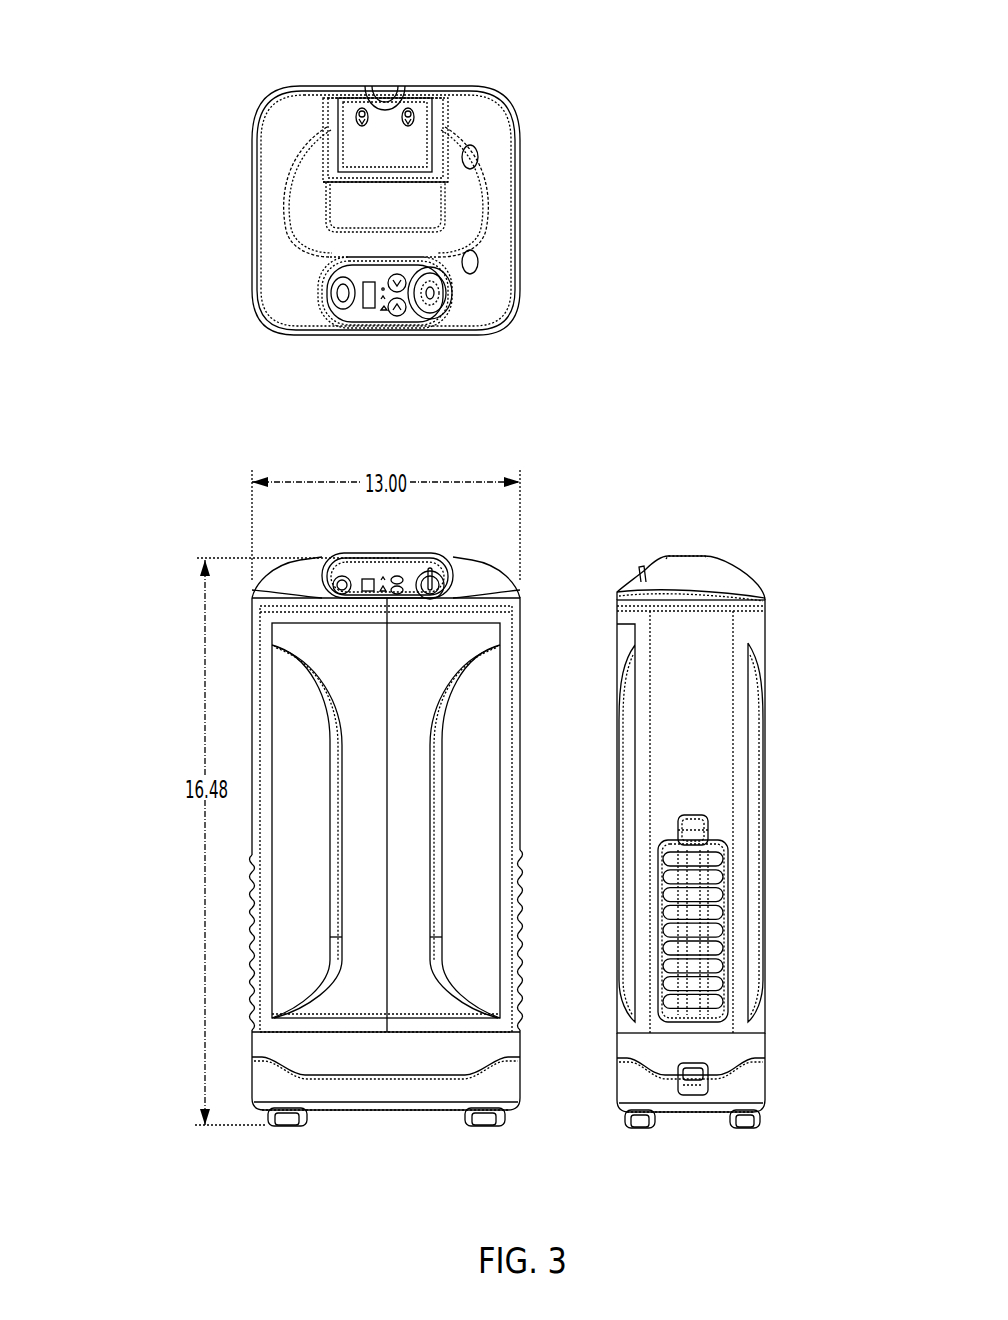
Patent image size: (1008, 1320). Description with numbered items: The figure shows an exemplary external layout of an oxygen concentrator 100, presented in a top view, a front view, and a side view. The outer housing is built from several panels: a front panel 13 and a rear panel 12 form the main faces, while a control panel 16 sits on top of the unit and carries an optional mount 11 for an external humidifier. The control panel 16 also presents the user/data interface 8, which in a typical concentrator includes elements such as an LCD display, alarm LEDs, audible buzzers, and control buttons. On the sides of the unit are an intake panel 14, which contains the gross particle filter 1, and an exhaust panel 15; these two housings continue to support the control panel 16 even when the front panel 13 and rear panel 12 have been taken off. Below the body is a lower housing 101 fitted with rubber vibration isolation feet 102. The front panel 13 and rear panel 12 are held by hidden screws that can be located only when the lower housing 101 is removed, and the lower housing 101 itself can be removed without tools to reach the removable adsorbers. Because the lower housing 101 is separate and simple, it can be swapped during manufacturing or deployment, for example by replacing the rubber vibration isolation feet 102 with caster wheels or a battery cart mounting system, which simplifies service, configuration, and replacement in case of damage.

The gross particle filter 1 is at (723, 958).
The user/data interface 8 is at (370, 293).
The mount 11 is at (390, 82).
The rear panel 12 is at (745, 628).
The front panel 13 is at (630, 732).
The intake panel 14 is at (520, 907).
The exhaust panel 15 is at (257, 953).
The control panel 16 is at (302, 587).
The concentrator 100 is at (362, 182).
The lower housing 101 is at (348, 1085).
The rubber vibration isolation feet 102 is at (738, 1115).